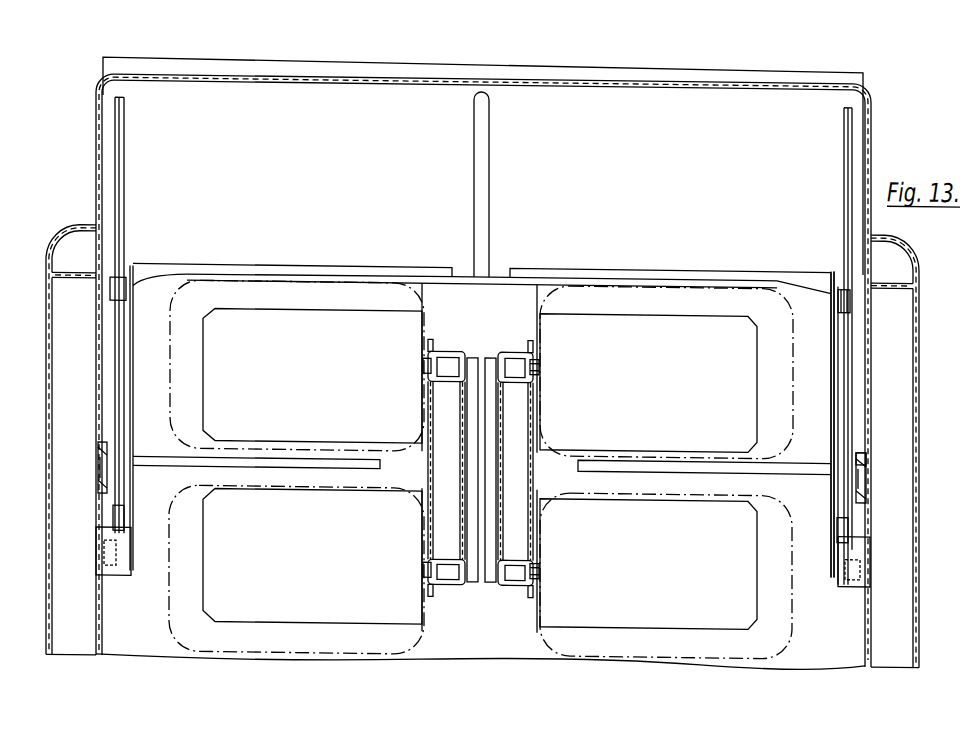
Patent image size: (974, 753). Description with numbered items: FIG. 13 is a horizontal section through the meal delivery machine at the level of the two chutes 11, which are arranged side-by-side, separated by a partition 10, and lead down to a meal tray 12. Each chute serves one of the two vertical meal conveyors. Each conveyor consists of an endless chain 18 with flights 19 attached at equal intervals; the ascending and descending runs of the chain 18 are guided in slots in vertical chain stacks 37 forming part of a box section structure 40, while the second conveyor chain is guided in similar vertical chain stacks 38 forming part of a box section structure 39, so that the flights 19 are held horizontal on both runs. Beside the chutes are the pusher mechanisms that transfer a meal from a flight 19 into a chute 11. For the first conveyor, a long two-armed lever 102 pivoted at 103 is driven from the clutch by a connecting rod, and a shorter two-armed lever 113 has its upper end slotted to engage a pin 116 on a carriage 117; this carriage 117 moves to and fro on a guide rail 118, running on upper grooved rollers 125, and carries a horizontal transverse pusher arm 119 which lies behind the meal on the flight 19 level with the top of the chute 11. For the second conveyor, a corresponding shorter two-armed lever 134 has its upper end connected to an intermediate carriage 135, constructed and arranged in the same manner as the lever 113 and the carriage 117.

The partition 10 is at (473, 112).
The chute 11 is at (791, 156).
The meal tray 12 is at (749, 64).
The endless chain 18 is at (539, 366).
The flight 19 is at (636, 311).
The vertical chain stack 37 is at (507, 352).
The vertical chain stack 38 is at (447, 352).
The box section structure 39 is at (459, 460).
The box section structure 40 is at (527, 460).
The long two-armed lever 102 is at (870, 450).
The pivot 103 is at (867, 478).
The shorter two-armed lever 113 is at (855, 548).
The pin 116 is at (860, 564).
The carriage 117 is at (835, 380).
The guide rail 118 is at (845, 343).
The horizontal transverse pusher arm 119 is at (813, 472).
The upper grooved roller 125 is at (851, 304).
The shorter two-armed lever 134 is at (103, 452).
The intermediate carriage 135 is at (133, 390).